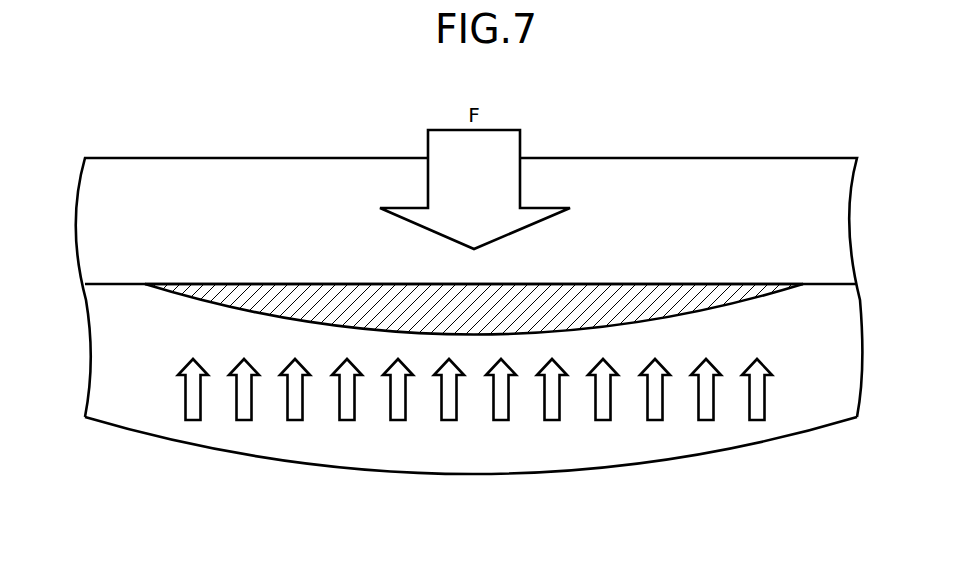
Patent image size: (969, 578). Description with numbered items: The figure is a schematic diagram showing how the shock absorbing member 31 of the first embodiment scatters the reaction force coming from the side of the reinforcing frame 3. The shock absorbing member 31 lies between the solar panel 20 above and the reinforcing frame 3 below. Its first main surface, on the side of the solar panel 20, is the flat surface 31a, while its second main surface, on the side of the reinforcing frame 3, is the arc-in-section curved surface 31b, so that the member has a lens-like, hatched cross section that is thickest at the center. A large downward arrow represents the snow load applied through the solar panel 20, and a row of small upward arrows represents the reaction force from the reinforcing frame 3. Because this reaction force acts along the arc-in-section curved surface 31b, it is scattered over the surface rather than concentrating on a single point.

The reinforcing frame 3 is at (698, 436).
The solar panel 20 is at (702, 185).
The shock absorbing member 31 is at (466, 314).
The flat surface 31a is at (623, 285).
The arc-in-section curved surface 31b is at (630, 325).